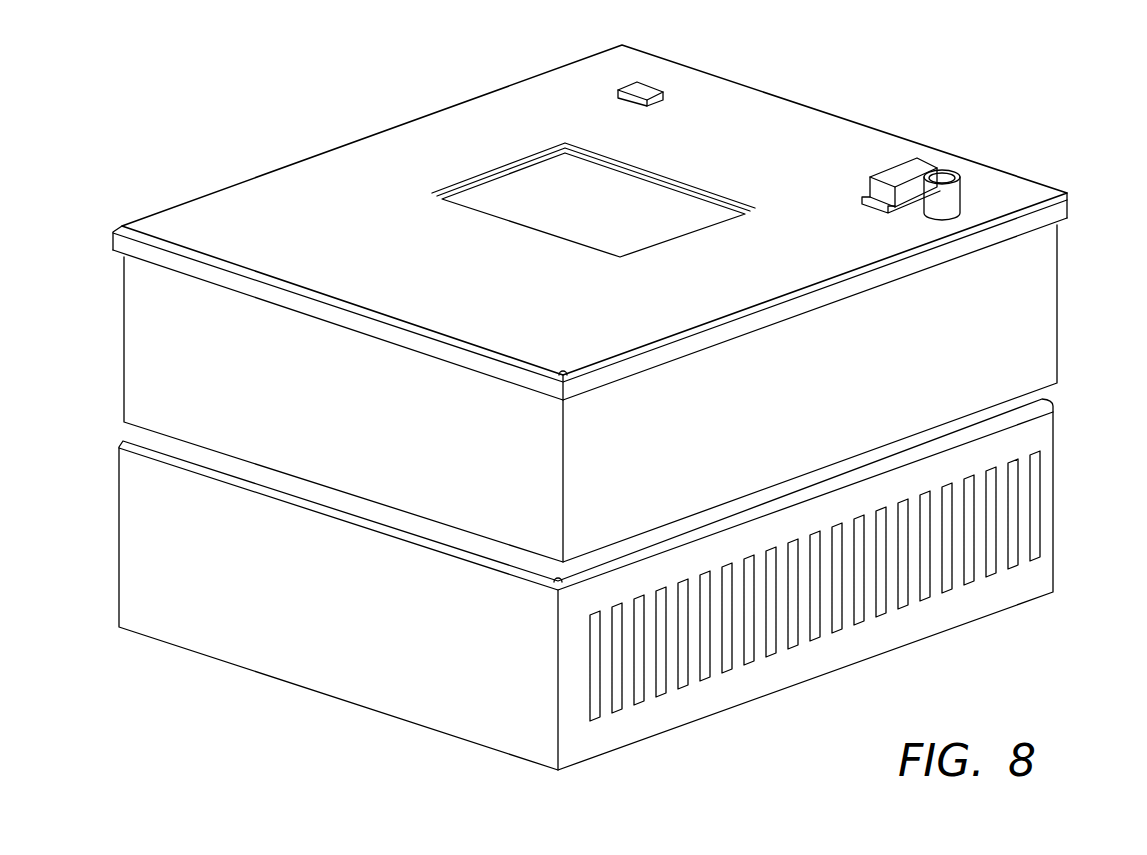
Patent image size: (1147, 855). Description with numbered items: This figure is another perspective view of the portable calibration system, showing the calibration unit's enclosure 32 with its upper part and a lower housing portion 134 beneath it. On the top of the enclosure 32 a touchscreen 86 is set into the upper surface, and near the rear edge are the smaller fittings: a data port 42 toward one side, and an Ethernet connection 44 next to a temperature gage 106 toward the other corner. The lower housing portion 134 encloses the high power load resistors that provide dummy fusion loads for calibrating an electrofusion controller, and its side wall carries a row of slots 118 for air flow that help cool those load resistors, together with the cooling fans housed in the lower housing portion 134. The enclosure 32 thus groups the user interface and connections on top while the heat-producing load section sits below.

The enclosure 32 is at (935, 103).
The data port 42 is at (645, 91).
The Ethernet connection 44 is at (892, 177).
The touchscreen 86 is at (652, 200).
The temperature gage 106 is at (952, 173).
The vent slots 118 is at (990, 574).
The lower housing portion 134 is at (1033, 430).